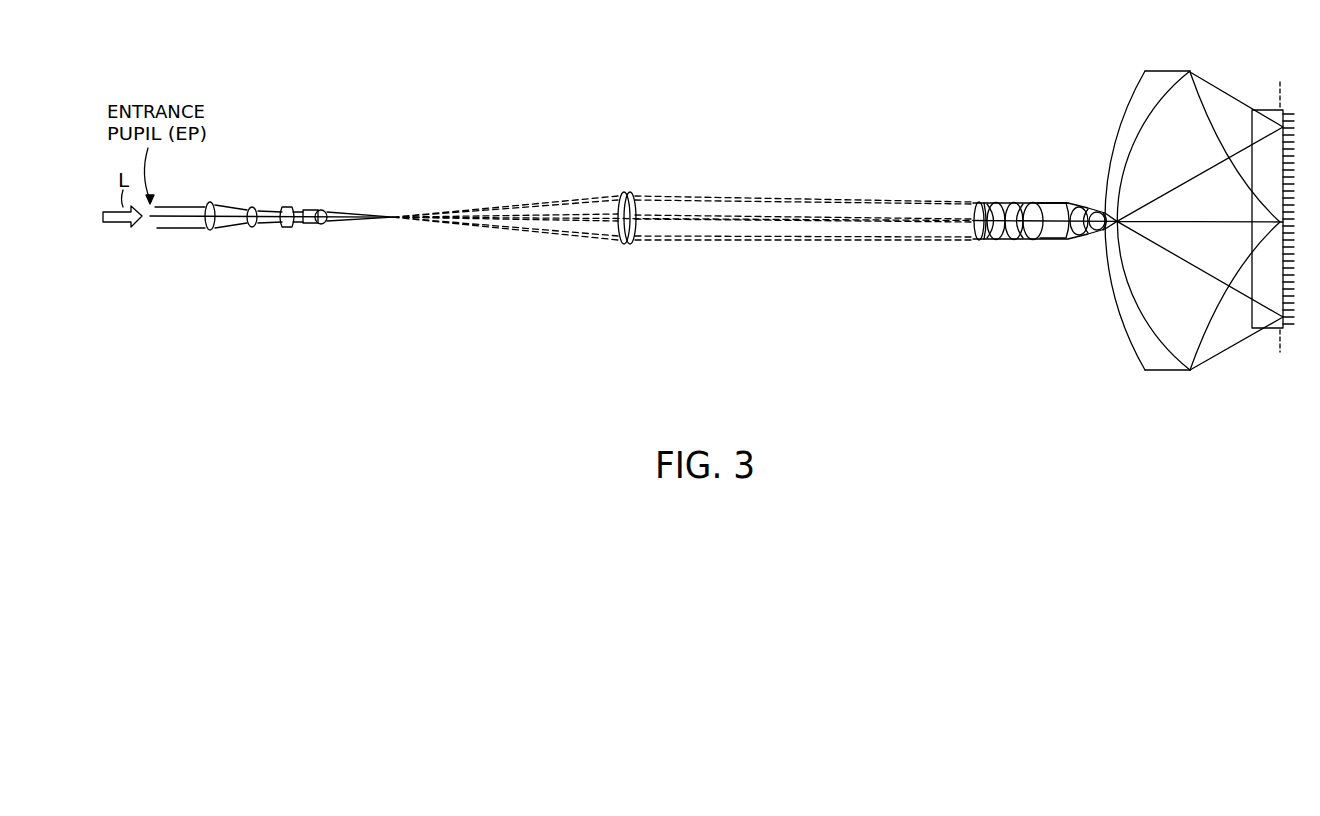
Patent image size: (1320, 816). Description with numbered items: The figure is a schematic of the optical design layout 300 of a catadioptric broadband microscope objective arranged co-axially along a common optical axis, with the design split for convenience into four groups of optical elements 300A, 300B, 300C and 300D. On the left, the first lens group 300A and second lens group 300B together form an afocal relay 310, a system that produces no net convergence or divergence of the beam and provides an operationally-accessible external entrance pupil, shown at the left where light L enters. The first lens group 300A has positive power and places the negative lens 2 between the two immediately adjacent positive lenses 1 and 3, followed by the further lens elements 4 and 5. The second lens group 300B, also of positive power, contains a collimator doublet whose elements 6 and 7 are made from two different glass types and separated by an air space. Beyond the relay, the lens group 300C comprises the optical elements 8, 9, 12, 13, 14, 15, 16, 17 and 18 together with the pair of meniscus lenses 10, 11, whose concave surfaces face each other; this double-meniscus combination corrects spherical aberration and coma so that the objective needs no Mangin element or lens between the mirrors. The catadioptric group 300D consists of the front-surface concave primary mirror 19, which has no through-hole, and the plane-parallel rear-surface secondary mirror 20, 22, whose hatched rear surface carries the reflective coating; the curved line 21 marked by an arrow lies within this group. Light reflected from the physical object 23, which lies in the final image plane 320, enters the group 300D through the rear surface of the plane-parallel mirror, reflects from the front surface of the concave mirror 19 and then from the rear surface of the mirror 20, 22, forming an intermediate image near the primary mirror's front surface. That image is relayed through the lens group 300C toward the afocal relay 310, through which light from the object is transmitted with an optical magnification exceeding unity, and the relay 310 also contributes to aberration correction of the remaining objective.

The positive lens 1 is at (209, 232).
The negative lens 2 is at (253, 228).
The positive lens 3 is at (291, 228).
The lens element 4 is at (309, 208).
The lens element 5 is at (323, 238).
The collimator doublet element 6 is at (622, 243).
The collimator doublet element 7 is at (647, 227).
The optical element 8 is at (975, 202).
The optical element 9 is at (991, 202).
The meniscus lens 10 is at (991, 240).
The meniscus lens 11 is at (1018, 240).
The optical element 12 is at (1020, 202).
The optical element 13 is at (1047, 239).
The optical element 14 is at (1053, 203).
The optical element 15 is at (1074, 206).
The optical element 16 is at (1083, 238).
The optical element 17 is at (1094, 210).
The optical element 18 is at (1090, 232).
The concave primary mirror 19 is at (1147, 82).
The plane-parallel secondary mirror 20 is at (1268, 108).
The second curved surface of combiner glass 21 is at (1179, 102).
The plane-parallel mirror 22 is at (1280, 204).
The object 23 is at (1290, 228).
The optical design layout 300 is at (637, 123).
The first lens group 300A is at (236, 249).
The second lens group 300B is at (630, 257).
The third lens group 300C is at (1036, 278).
The catadioptric group 300D is at (1207, 230).
The afocal relay 310 is at (738, 322).
The final image plane 320 is at (1280, 350).